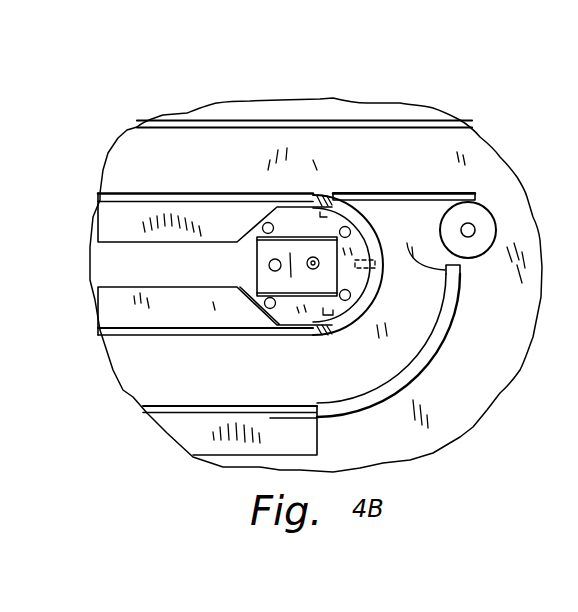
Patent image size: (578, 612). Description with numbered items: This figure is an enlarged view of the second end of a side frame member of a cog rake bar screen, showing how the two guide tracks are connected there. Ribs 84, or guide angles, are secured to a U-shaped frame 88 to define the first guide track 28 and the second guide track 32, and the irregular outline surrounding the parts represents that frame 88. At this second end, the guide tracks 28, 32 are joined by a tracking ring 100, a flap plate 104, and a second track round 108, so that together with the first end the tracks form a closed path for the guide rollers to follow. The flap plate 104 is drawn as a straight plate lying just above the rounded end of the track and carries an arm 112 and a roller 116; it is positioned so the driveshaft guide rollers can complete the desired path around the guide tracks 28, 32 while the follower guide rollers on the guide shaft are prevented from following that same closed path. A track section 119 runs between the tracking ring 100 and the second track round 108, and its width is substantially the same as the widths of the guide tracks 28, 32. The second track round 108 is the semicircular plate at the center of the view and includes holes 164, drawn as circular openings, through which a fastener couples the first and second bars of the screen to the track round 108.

The first guide track 28 is at (117, 155).
The second guide track 32 is at (135, 382).
The ribs 84 is at (221, 113).
The U-shaped frame 88 is at (447, 410).
The tracking ring 100 is at (443, 312).
The flap plate 104 is at (413, 184).
The second track round 108 is at (337, 305).
The arm 112 is at (365, 192).
The roller 116 is at (482, 217).
The track section 119 is at (455, 275).
The holes 164 is at (307, 262).